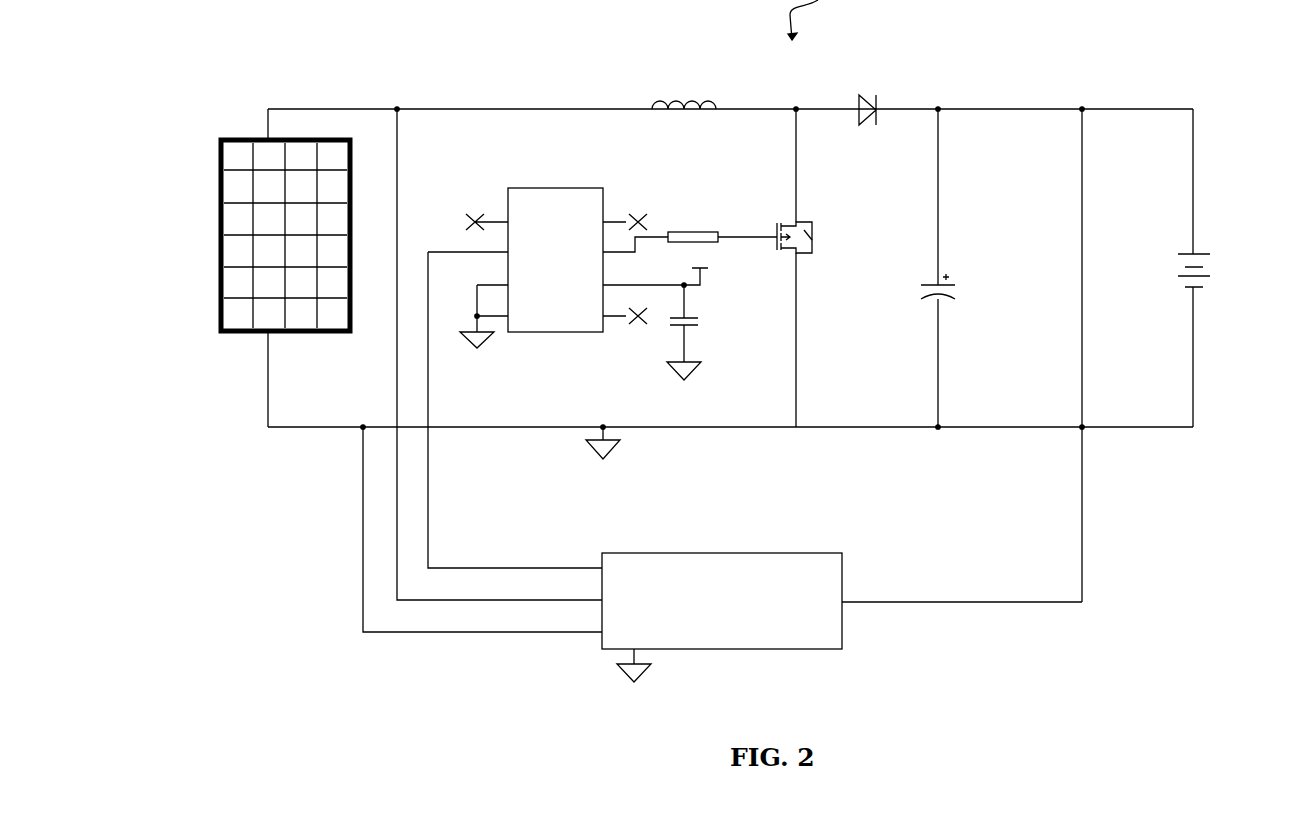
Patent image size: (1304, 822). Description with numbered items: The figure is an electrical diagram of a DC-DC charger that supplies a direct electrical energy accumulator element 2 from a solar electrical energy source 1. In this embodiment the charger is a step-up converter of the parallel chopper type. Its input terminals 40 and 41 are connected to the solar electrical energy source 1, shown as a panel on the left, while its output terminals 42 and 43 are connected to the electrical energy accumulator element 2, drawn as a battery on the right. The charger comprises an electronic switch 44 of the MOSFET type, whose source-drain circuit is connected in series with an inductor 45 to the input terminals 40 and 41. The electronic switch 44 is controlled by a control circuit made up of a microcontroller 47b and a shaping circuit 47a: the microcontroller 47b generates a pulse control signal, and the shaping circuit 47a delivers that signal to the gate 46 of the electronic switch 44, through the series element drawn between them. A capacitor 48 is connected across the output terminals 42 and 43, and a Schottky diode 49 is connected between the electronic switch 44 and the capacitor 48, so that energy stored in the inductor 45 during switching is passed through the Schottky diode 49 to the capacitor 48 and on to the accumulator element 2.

The solar electrical energy source 1 is at (243, 248).
The direct electrical energy accumulator element 2 is at (1205, 268).
The input terminal 40 is at (373, 105).
The input terminal 41 is at (320, 428).
The output terminal 42 is at (1120, 107).
The output terminal 43 is at (1140, 428).
The electronic switch 44 is at (816, 232).
The inductor 45 is at (673, 104).
The gate 46 is at (750, 236).
The shaping circuit 47a is at (551, 232).
The microcontroller 47b is at (742, 598).
The capacitor 48 is at (955, 290).
The Schottky diode 49 is at (860, 100).